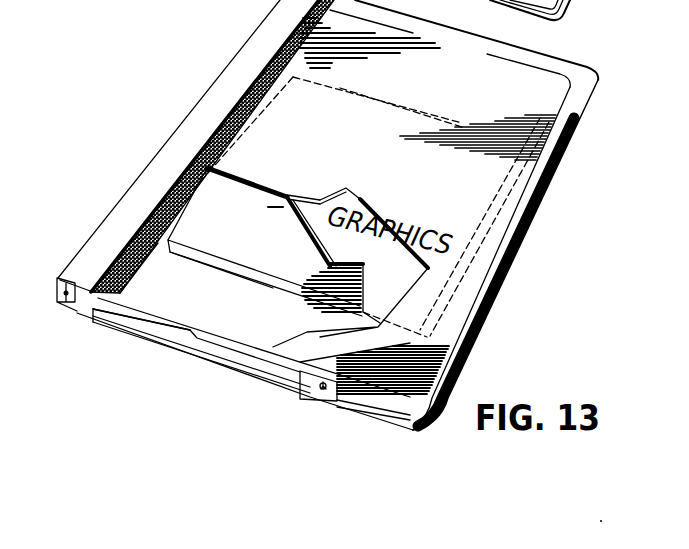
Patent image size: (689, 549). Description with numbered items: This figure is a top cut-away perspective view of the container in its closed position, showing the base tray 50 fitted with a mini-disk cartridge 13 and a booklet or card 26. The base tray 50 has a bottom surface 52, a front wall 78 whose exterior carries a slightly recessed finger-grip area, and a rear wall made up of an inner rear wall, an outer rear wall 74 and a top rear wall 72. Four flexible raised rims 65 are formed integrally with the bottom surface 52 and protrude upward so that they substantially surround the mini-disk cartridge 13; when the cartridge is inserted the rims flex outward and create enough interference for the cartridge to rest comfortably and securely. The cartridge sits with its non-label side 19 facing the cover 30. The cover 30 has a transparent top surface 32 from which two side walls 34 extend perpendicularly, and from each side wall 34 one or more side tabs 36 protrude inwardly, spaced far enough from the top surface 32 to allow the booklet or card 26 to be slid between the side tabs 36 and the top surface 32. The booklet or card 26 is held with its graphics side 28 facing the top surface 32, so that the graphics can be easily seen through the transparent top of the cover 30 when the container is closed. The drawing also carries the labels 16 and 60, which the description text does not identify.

The hinge edge 13 is at (258, 175).
The insert card 16 is at (210, 198).
The tab 19 is at (277, 199).
The graphics panel edge 26 is at (361, 195).
The pocket 28 is at (396, 296).
The back wall corner 30 is at (586, 64).
The floor of tray 32 is at (455, 196).
The latch tab 34 is at (326, 389).
The lid 36 is at (495, 10).
The front wall 50 is at (134, 352).
The floor recess 52 is at (238, 329).
The front rail 60 is at (178, 331).
The side wall inner face / ledge 65 is at (185, 173).
The left side wall 72 is at (213, 97).
The end cap 74 is at (58, 289).
The right side wall 78 is at (525, 212).